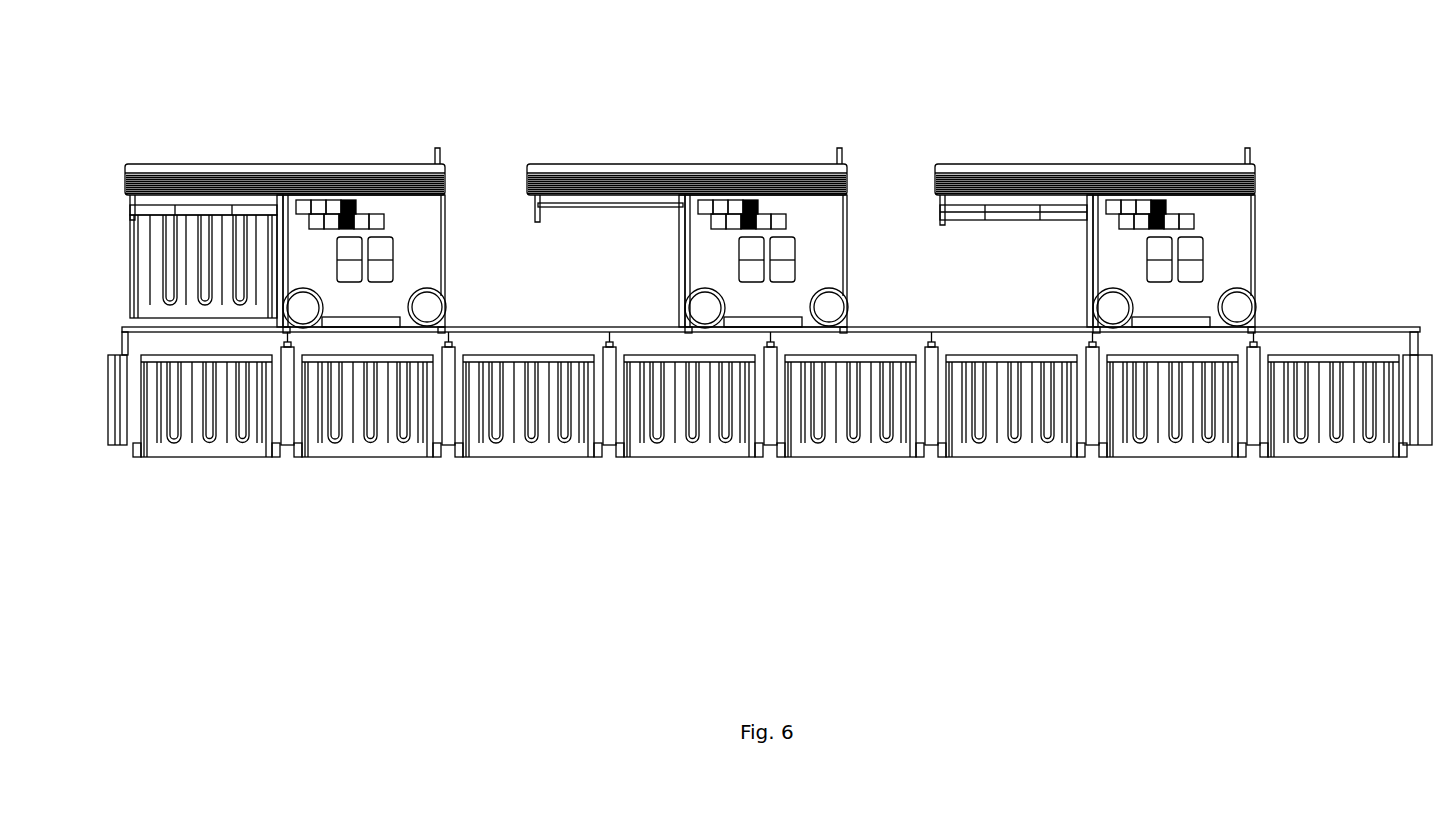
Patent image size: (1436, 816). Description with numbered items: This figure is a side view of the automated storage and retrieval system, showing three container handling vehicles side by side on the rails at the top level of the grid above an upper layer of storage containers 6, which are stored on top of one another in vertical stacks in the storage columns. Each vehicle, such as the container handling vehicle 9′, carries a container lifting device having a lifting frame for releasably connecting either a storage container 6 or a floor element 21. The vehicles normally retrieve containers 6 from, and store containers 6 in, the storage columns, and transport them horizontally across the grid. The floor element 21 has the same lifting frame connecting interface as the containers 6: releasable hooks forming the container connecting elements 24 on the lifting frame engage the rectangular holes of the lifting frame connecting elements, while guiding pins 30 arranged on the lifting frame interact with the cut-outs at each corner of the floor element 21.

The container handling vehicle 9′ is at (682, 165).
The guiding pin 30 is at (128, 222).
The storage container 6 is at (157, 270).
The container connecting element 24 is at (543, 207).
The floor element 21 is at (973, 215).